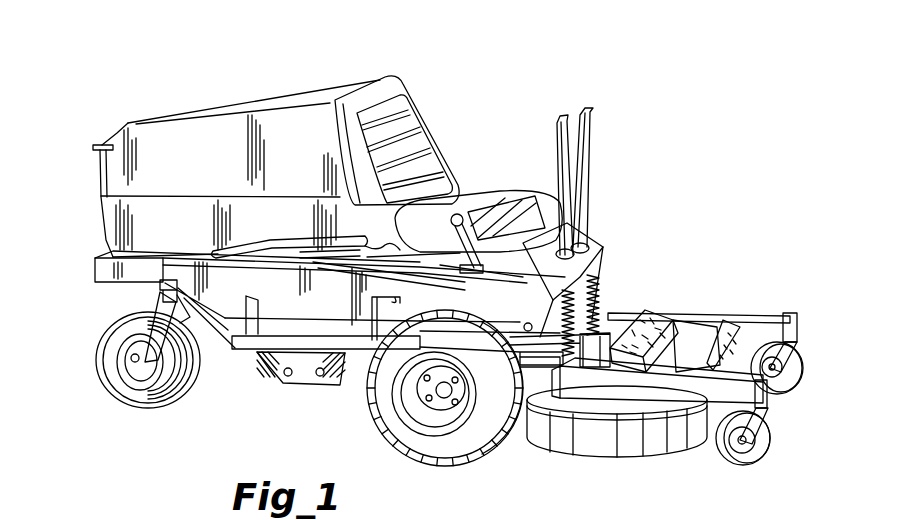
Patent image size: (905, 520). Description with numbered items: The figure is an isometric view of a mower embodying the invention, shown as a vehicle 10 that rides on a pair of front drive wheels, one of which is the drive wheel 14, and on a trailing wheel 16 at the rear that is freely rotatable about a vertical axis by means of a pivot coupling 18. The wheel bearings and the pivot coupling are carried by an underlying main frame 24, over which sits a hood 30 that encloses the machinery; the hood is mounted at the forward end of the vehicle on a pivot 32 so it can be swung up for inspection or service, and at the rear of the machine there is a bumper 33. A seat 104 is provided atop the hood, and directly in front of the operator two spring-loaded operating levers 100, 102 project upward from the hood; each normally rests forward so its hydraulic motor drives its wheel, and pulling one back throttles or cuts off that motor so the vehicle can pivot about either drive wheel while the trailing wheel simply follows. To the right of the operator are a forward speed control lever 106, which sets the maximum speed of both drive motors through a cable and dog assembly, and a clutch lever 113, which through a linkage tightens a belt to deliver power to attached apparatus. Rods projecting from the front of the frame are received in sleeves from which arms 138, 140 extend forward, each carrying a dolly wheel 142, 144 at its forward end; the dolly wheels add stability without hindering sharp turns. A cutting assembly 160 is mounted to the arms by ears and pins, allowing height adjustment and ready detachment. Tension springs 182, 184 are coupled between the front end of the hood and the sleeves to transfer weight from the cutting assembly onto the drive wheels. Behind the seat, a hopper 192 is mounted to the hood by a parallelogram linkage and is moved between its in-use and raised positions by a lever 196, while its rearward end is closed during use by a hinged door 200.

The vehicle 10 is at (388, 63).
The drive wheel 14 is at (473, 460).
The trailing wheel 16 is at (141, 396).
The pivot coupling 18 is at (160, 293).
The main frame 24 is at (252, 343).
The hood 30 is at (306, 309).
The pivot 32 is at (528, 323).
The bumper 33 is at (95, 272).
The operating lever 100 is at (557, 157).
The operating lever 102 is at (588, 157).
The seat 104 is at (440, 147).
The forward speed control lever 106 is at (472, 200).
The clutch lever 113 is at (395, 297).
The arm 138 is at (765, 313).
The arm 140 is at (692, 405).
The dolly wheel 142 is at (803, 368).
The dolly wheel 144 is at (770, 434).
The cutting assembly 160 is at (634, 462).
The tension spring 182 is at (598, 292).
The tension spring 184 is at (573, 313).
The hopper 192 is at (187, 110).
The lever 196 is at (272, 238).
The hinged door 200 is at (100, 172).